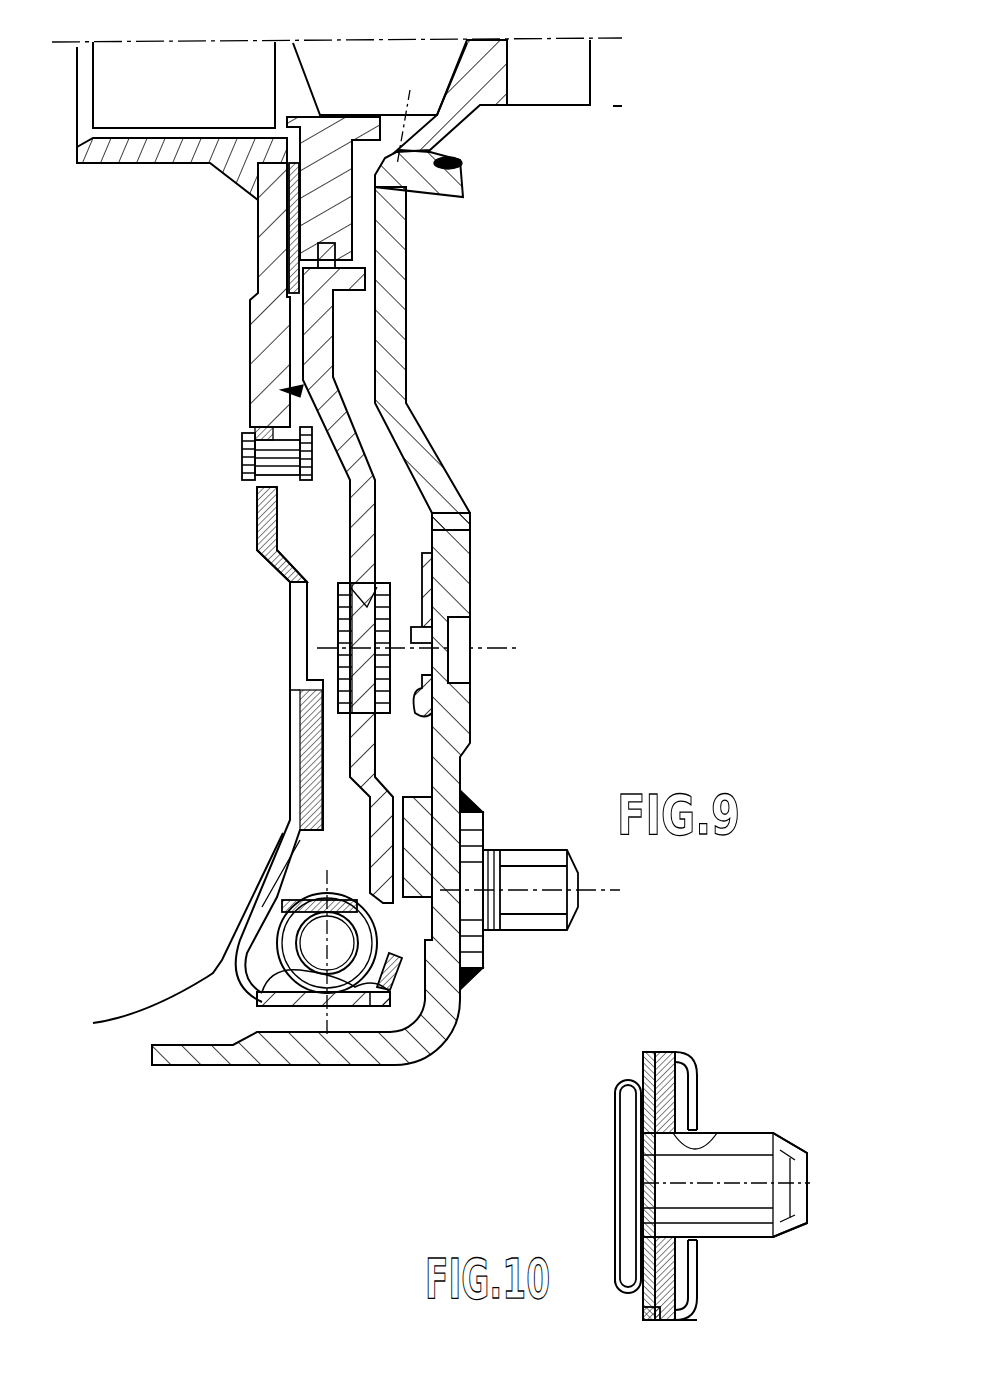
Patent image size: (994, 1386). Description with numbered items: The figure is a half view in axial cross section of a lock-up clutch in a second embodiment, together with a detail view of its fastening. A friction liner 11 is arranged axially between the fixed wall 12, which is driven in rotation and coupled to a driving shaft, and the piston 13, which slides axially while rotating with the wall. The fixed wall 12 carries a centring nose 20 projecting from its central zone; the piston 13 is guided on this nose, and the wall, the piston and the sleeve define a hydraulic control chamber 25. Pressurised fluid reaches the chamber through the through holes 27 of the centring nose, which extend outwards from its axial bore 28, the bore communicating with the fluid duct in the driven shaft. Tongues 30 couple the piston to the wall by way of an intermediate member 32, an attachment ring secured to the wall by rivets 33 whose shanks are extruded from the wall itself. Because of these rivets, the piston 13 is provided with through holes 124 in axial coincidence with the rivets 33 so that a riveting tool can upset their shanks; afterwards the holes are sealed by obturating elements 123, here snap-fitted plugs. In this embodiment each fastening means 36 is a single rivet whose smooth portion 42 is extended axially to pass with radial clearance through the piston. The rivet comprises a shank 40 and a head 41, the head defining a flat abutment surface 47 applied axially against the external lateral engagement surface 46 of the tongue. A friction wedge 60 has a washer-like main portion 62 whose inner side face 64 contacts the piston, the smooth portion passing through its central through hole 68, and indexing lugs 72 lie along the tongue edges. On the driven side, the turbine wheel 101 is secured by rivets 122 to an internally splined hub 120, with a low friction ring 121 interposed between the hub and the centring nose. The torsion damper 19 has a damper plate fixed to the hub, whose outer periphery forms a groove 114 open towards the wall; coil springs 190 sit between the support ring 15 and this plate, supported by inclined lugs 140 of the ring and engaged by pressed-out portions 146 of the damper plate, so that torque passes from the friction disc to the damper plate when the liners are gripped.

In FIG. 9, the friction liner 11 is at (423, 827).
In FIG. 9, the fixed wall 12 is at (460, 490).
In FIG. 9, the piston 13 is at (287, 390).
In FIG. 9, the support ring 15 is at (405, 800).
In FIG. 9, the torsion damper 19 is at (283, 653).
In FIG. 9, the centring nose 20 is at (490, 87).
In FIG. 9, the hydraulic control chamber 25 is at (393, 493).
In FIG. 9, the through holes 27 is at (407, 207).
In FIG. 9, the bore 28 is at (293, 43).
In FIG. 10, the tongue 30 is at (647, 1297).
In FIG. 9, the intermediate member 32 is at (433, 613).
In FIG. 9, the rivets 33 is at (447, 710).
In FIG. 10, the fastening means 36 is at (598, 1252).
In FIG. 10, the shank 40 is at (820, 1190).
In FIG. 10, the head 41 is at (617, 1123).
In FIG. 10, the smooth portion 42 is at (660, 1200).
In FIG. 10, the external lateral engagement surface 46 is at (642, 1080).
In FIG. 10, the abutment surface 47 is at (673, 1080).
In FIG. 10, the friction wedge 60 is at (707, 1098).
In FIG. 10, the main portion 62 is at (677, 1320).
In FIG. 10, the inner side face 64 is at (687, 1270).
In FIG. 10, the central through hole 68 is at (673, 1147).
In FIG. 10, the indexing lugs 72 is at (657, 1052).
In FIG. 9, the turbine wheel 101 is at (127, 1023).
In FIG. 9, the groove 114 is at (380, 1010).
In FIG. 9, the hub 120 is at (145, 170).
In FIG. 9, the low friction ring 121 is at (290, 253).
In FIG. 9, the rivets 122 is at (267, 460).
In FIG. 9, the obturating elements 123 is at (357, 633).
In FIG. 9, the through holes 124 is at (350, 587).
In FIG. 9, the inclined lugs 140 is at (392, 963).
In FIG. 9, the pressed-out portions 146 is at (333, 1017).
In FIG. 9, the coil springs 190 is at (260, 1007).